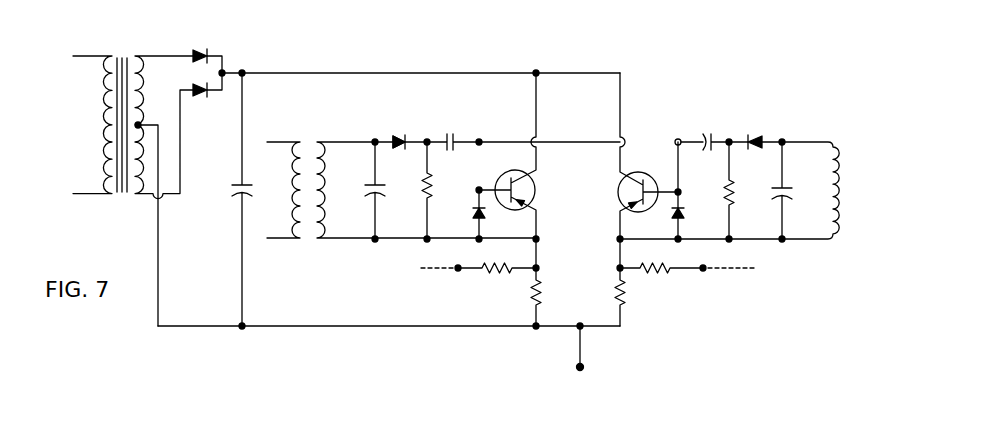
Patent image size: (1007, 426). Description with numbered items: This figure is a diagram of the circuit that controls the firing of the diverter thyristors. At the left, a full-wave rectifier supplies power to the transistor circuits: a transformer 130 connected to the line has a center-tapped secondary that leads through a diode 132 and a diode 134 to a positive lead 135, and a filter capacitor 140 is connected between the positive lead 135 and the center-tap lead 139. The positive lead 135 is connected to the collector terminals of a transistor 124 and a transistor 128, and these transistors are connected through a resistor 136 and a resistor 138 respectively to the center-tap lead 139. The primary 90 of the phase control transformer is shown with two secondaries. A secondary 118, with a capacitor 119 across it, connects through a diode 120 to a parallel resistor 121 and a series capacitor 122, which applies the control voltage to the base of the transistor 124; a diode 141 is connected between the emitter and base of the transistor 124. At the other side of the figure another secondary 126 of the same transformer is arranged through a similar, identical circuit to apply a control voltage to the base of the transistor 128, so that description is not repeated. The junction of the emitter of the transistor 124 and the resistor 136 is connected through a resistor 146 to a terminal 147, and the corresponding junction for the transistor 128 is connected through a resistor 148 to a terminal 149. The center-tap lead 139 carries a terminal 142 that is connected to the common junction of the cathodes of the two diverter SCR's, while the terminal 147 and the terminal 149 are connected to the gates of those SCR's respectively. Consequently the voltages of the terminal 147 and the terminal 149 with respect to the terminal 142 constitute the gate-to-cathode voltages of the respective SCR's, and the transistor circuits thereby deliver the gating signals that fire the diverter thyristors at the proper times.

The transformer 130 is at (118, 54).
The diode 132 is at (202, 53).
The diode 134 is at (206, 98).
The positive lead 135 is at (358, 73).
The filter capacitor 140 is at (236, 197).
The phase control transformer primary 90 is at (300, 142).
The secondary 118 is at (320, 140).
The capacitor 119 is at (372, 185).
The diode 120 is at (397, 134).
The resistor 121 is at (421, 188).
The capacitor 122 is at (452, 132).
The transistor 124 is at (537, 188).
The diode 141 is at (474, 214).
The transistor 128 is at (640, 173).
The secondary 126 is at (840, 172).
The resistor 136 is at (542, 292).
The resistor 138 is at (613, 296).
The resistor 146 is at (496, 276).
The terminal 147 is at (457, 272).
The resistor 148 is at (653, 276).
The terminal 149 is at (705, 272).
The center-tap lead 139 is at (365, 328).
The terminal 142 is at (585, 364).